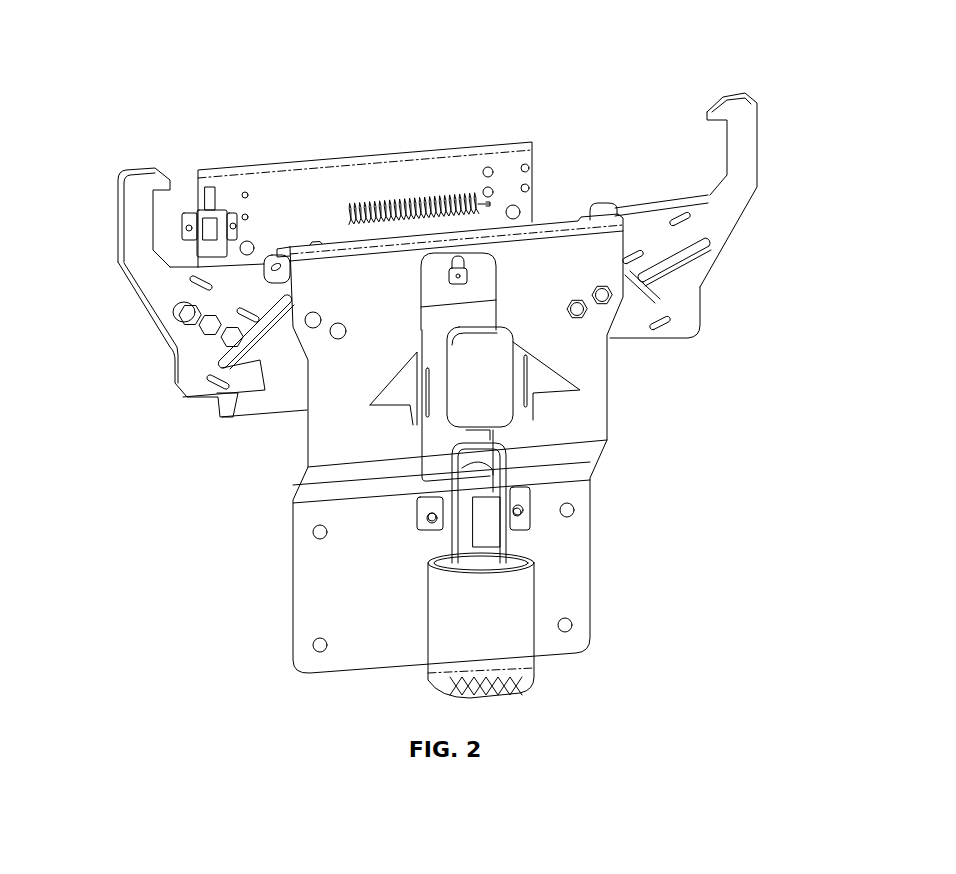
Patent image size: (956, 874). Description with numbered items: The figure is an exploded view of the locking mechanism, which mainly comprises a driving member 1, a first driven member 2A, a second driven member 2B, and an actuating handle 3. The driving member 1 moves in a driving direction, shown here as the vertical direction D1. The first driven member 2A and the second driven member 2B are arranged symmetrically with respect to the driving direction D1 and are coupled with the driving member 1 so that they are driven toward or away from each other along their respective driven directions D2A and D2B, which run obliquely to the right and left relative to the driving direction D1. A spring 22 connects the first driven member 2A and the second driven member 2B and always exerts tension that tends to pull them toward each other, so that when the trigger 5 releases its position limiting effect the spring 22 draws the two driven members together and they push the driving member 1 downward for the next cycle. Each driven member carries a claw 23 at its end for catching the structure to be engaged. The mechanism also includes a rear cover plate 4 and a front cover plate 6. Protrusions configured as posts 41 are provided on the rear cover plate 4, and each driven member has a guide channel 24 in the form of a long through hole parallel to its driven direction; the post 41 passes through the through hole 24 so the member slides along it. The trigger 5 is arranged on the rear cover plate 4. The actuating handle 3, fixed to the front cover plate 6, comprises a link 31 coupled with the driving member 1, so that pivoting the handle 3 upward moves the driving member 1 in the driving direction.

The driving member 1 is at (463, 395).
The actuating handle 3 is at (445, 668).
The rear cover plate 4 is at (327, 178).
The trigger 5 is at (208, 198).
The front cover plate 6 is at (597, 408).
The spring 22 is at (430, 208).
The claw 23 is at (135, 180).
The guide channel 24 is at (172, 318).
The first driven member 2A is at (158, 277).
The second driven member 2B is at (722, 213).
The link 31 is at (457, 513).
The protrusion 41 is at (200, 328).
The driving direction D1 is at (723, 612).
The driven direction D2A is at (723, 605).
The driven direction D2B is at (723, 605).